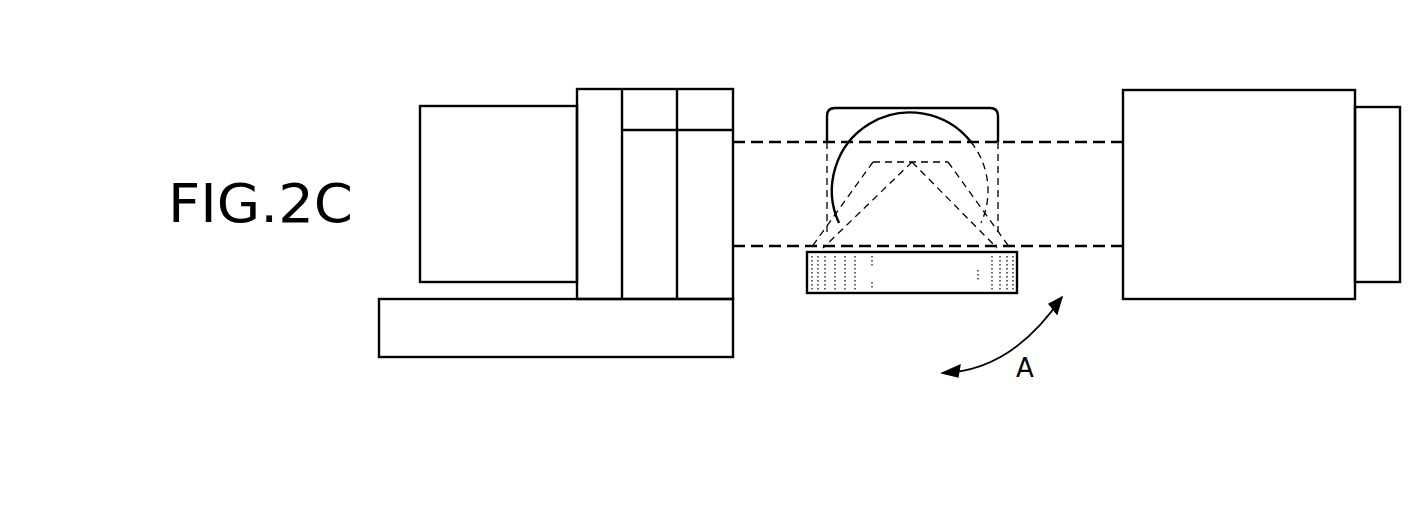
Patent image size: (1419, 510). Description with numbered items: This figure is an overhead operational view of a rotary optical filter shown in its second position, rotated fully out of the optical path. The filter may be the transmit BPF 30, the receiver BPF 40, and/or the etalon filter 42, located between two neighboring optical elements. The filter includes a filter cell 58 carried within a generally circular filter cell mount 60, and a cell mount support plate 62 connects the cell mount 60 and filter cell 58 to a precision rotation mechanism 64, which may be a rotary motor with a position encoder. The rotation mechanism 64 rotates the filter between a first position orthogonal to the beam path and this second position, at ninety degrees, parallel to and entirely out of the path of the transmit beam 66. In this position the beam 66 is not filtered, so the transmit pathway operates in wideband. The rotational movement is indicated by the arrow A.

The transmit BPF 30 is at (889, 229).
The receiver BPF 40 is at (889, 229).
The etalon filter 42 is at (889, 229).
The filter cell 58 is at (889, 308).
The filter cell mount 60 is at (807, 273).
The cell mount support plate 62 is at (910, 127).
The rotation mechanism 64 is at (852, 108).
The transmit beam 66 is at (1066, 142).